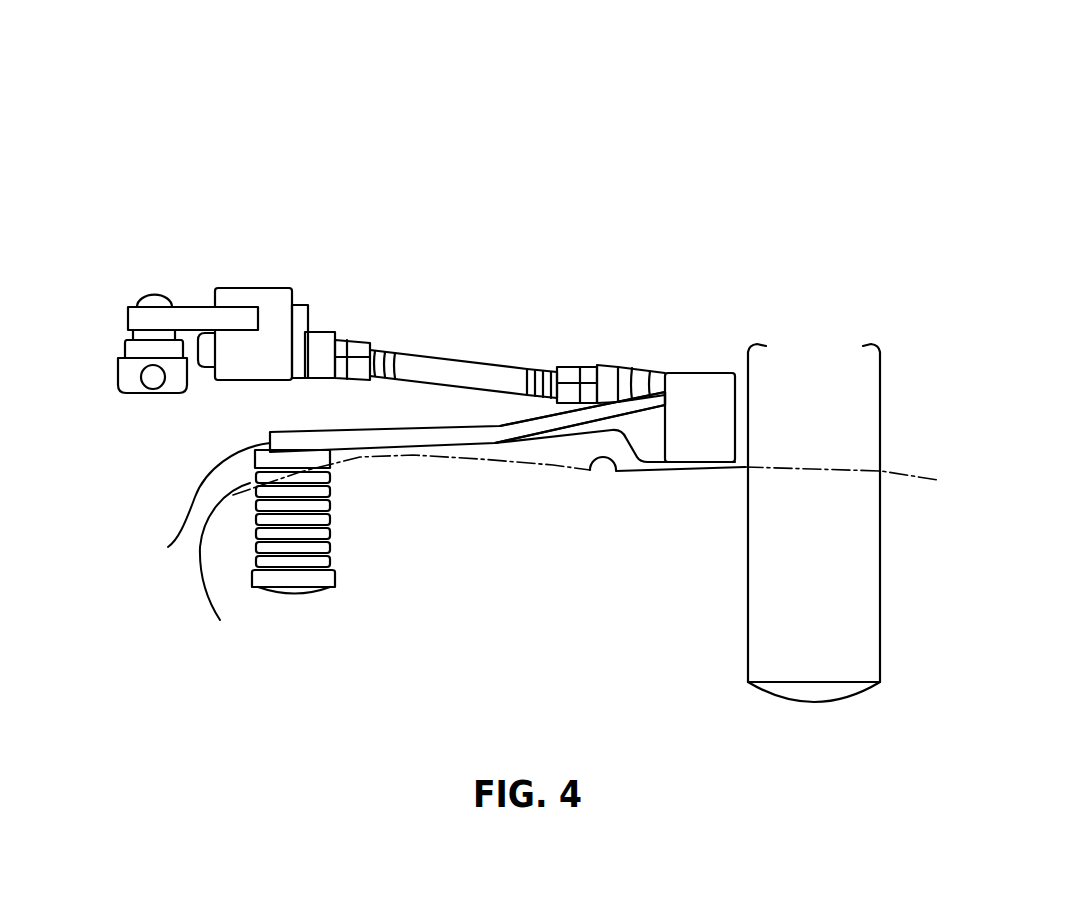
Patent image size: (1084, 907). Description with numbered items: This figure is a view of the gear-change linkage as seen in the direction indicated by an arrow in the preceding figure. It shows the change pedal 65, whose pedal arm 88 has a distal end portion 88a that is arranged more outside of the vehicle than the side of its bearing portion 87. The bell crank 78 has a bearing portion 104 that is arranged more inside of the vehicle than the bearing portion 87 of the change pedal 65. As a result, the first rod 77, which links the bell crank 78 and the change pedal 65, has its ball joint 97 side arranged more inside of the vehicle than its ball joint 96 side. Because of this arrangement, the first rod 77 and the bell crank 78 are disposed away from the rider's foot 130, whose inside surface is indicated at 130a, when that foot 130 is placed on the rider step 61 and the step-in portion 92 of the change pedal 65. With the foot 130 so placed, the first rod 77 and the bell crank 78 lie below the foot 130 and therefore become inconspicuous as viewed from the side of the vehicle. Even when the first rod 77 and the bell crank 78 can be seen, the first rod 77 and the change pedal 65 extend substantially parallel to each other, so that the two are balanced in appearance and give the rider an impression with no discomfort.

The rider step 61 is at (810, 657).
The change pedal 65 is at (498, 443).
The first rod 77 is at (467, 360).
The bell crank 78 is at (197, 298).
The bearing portion 87 is at (698, 452).
The pedal arm 88 is at (415, 437).
The distal end portion 88a is at (196, 531).
The step-in portion 92 is at (297, 580).
The ball joint 96 is at (655, 380).
The ball joint 97 is at (296, 340).
The bearing portion 104 is at (253, 293).
The rider's foot 130 is at (917, 475).
The inside surface of the foot 130a is at (611, 474).